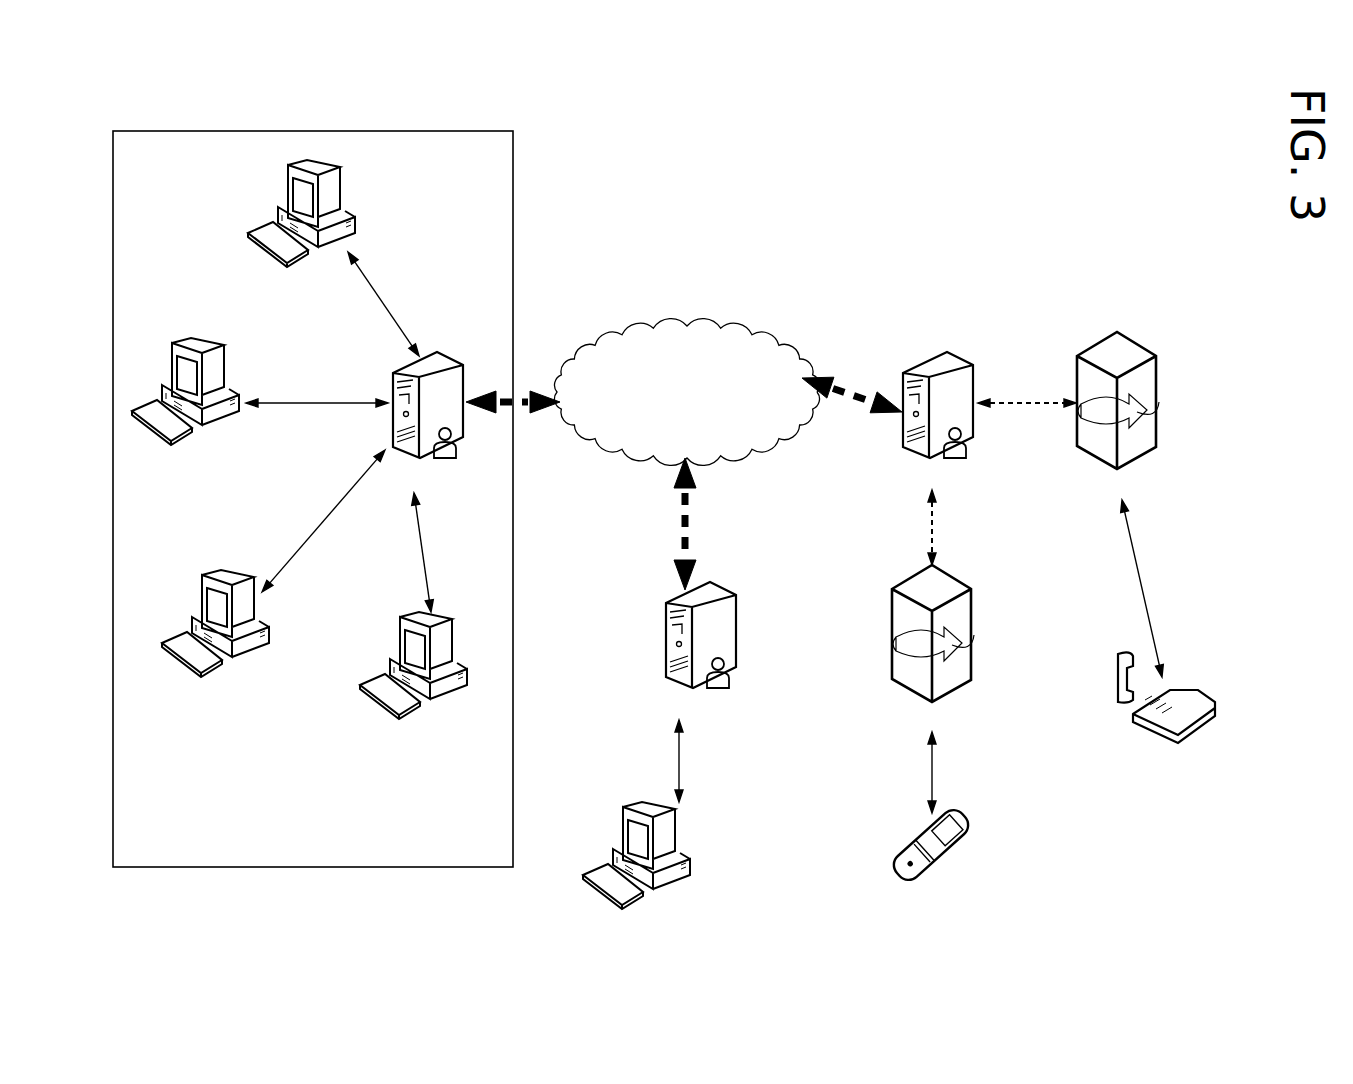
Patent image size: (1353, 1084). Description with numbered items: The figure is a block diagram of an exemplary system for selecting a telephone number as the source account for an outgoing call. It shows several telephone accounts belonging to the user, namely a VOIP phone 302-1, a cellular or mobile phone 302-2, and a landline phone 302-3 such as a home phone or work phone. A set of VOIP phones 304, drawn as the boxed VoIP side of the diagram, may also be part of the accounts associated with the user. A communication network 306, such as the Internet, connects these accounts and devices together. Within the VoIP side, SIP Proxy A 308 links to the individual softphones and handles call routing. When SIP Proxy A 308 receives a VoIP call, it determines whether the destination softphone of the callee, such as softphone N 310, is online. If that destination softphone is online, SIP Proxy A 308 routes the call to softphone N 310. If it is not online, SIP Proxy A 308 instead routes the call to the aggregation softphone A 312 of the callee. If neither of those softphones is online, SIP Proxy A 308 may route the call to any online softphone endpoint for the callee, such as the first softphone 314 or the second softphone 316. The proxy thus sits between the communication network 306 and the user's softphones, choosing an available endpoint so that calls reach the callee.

The VOIP phone 302-1 is at (682, 838).
The cellular or mobile phone 302-2 is at (957, 815).
The landline phone 302-3 is at (1175, 700).
The set of VOIP phones 304 is at (514, 212).
The communication network 306 is at (688, 416).
The SIP Proxy A 308 is at (430, 362).
The softphone N 310 is at (443, 612).
The aggregation softphone A 312 is at (340, 178).
The softphone_1 314 is at (210, 345).
The softphone_2 316 is at (240, 576).